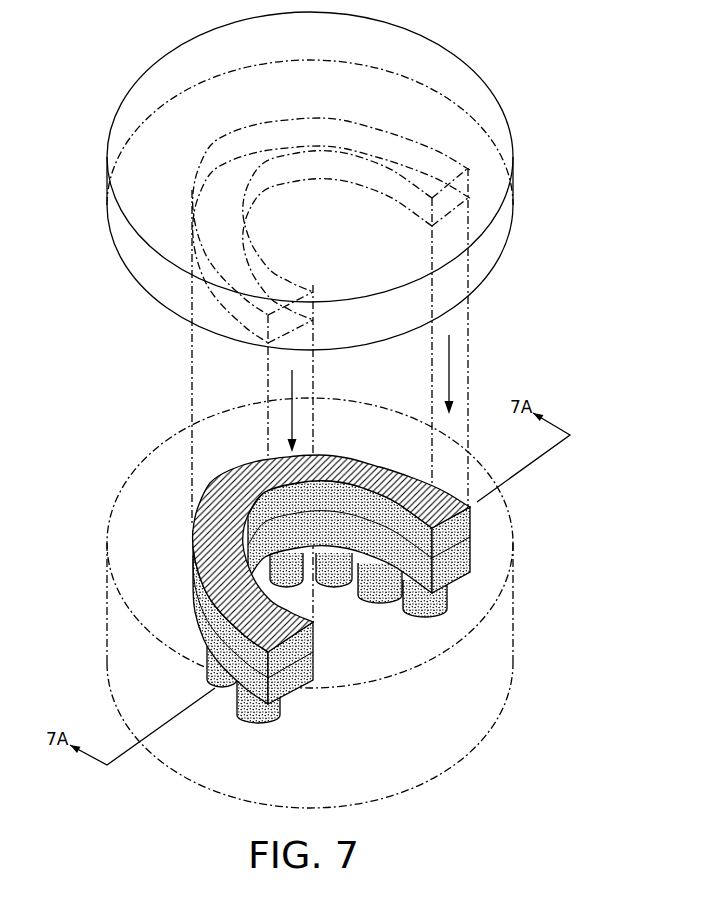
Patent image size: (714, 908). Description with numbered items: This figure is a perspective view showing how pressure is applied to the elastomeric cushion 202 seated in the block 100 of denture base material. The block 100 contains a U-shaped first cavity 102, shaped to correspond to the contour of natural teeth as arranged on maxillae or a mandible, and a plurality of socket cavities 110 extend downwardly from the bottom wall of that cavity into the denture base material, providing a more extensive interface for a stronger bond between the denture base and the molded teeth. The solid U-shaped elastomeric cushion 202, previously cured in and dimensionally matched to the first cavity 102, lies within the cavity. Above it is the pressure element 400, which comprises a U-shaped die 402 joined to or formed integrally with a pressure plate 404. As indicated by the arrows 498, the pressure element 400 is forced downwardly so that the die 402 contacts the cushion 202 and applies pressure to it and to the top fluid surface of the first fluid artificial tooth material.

The pressure element 400 is at (482, 50).
The U-shaped die 402 is at (481, 121).
The pressure plate 404 is at (110, 248).
The block of denture base material 100 is at (153, 441).
The elastomeric cushion 202 is at (237, 468).
The first cavity 102 is at (348, 468).
The socket cavities 110 is at (193, 584).
The arrows 498 is at (292, 388).